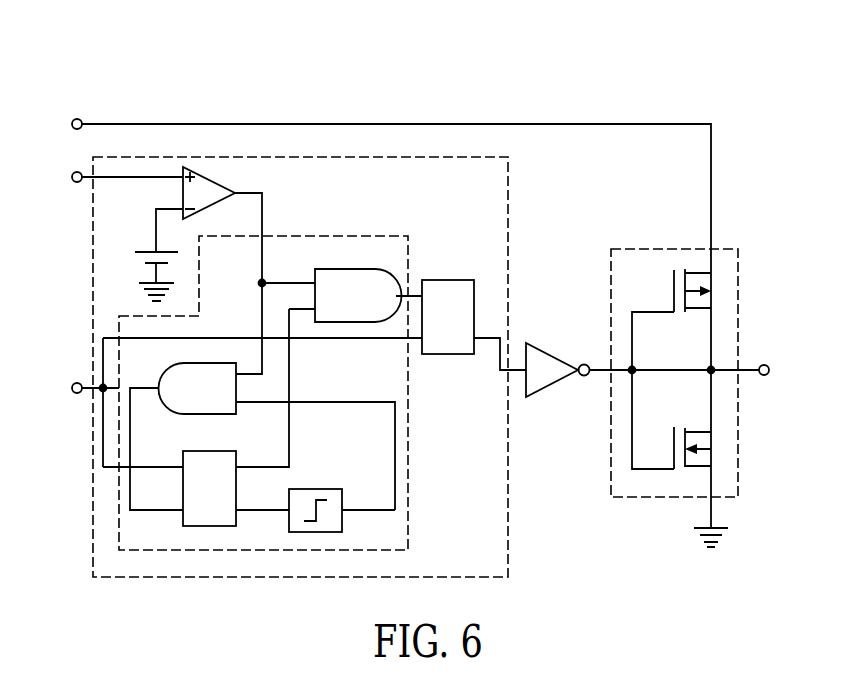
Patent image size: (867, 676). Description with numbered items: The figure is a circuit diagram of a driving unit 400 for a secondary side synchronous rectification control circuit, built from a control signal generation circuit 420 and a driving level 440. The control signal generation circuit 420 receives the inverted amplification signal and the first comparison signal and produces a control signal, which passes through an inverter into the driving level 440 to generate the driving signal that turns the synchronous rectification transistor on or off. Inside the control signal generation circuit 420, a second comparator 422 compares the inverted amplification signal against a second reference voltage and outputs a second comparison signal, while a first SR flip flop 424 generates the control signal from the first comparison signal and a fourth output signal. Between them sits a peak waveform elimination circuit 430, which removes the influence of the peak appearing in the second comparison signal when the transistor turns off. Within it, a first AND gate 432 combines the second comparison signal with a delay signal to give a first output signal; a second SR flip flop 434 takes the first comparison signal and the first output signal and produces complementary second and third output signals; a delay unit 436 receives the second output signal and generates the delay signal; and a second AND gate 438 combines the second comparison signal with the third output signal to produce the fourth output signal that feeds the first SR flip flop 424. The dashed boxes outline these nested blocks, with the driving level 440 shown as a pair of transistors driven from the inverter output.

The driving unit 400 is at (607, 66).
The control signal generation circuit 420 is at (508, 203).
The second comparator 422 is at (210, 172).
The first SR flip flop 424 is at (453, 280).
The peak waveform elimination circuit 430 is at (408, 470).
The first AND gate 432 is at (215, 362).
The second SR flip flop 434 is at (221, 450).
The delay unit 436 is at (321, 489).
The second AND gate 438 is at (346, 268).
The driving level 440 is at (729, 248).